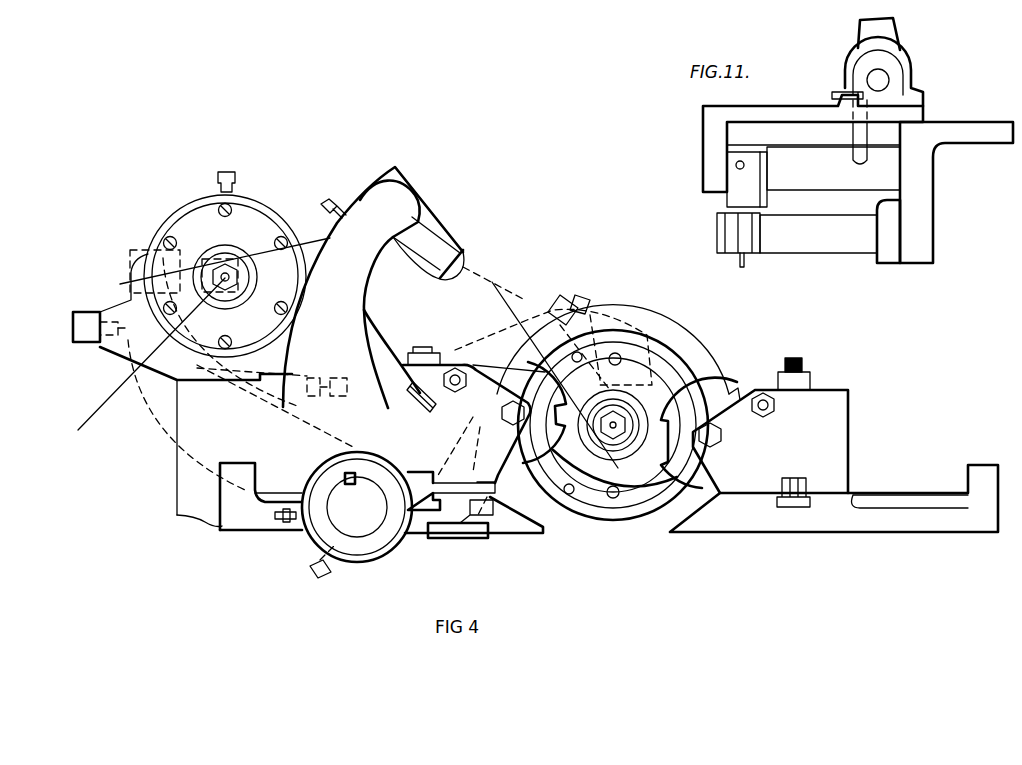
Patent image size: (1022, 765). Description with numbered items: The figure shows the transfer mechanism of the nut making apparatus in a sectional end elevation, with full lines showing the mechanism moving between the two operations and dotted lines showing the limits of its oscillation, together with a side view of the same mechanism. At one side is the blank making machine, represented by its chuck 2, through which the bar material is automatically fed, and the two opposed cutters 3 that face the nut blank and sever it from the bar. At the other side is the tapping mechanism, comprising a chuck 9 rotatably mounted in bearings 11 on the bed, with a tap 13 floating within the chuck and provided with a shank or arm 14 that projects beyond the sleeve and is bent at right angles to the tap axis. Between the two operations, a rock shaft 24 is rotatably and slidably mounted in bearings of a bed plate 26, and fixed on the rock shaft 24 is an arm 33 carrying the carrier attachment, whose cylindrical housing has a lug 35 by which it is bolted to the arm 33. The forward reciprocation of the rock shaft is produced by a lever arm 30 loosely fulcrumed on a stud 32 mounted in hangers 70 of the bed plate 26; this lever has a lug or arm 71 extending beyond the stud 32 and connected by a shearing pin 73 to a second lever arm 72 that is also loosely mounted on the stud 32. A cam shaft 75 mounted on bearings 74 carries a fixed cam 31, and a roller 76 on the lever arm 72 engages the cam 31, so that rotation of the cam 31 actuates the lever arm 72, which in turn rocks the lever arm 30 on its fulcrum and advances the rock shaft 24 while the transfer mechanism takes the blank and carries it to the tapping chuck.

In FIG. 4, the chuck 2 is at (620, 440).
In FIG. 11, the chuck 2 is at (703, 284).
In FIG. 4, the cutters 3 is at (625, 427).
In FIG. 4, the chuck 9 is at (237, 272).
In FIG. 4, the bearings 11 is at (186, 205).
In FIG. 4, the tap 13 is at (141, 363).
In FIG. 4, the shank or arm 14 is at (225, 268).
In FIG. 4, the rock shaft 24 is at (422, 515).
In FIG. 11, the rock shaft 24 is at (878, 86).
In FIG. 4, the bed plate 26 is at (243, 532).
In FIG. 11, the bed plate 26 is at (782, 110).
In FIG. 11, the lever arm 30 is at (823, 132).
In FIG. 11, the cam 31 is at (742, 266).
In FIG. 11, the stud 32 is at (898, 177).
In FIG. 4, the arm 33 is at (513, 320).
In FIG. 11, the arm 33 is at (870, 33).
In FIG. 4, the lug 35 is at (435, 210).
In FIG. 11, the hangers 70 is at (712, 149).
In FIG. 11, the lug or arm 71 is at (772, 203).
In FIG. 11, the lever arm 72 is at (736, 183).
In FIG. 11, the shearing pin 73 is at (768, 187).
In FIG. 11, the bearings 74 is at (890, 243).
In FIG. 11, the cam shaft 75 is at (718, 236).
In FIG. 11, the roller 76 is at (752, 235).